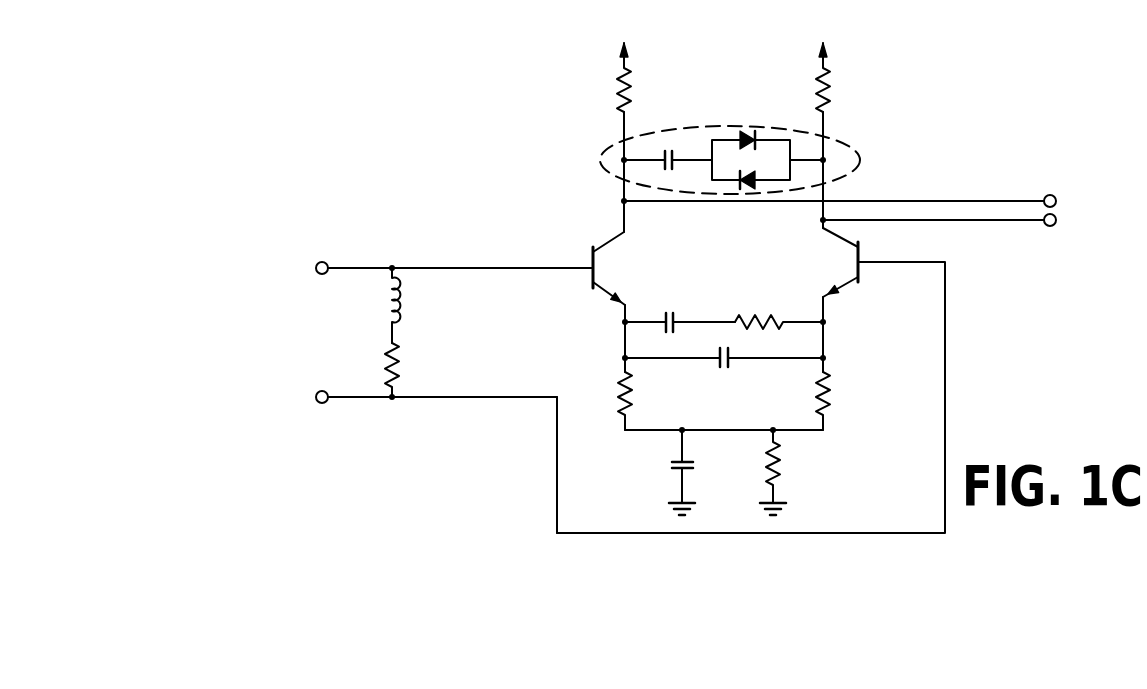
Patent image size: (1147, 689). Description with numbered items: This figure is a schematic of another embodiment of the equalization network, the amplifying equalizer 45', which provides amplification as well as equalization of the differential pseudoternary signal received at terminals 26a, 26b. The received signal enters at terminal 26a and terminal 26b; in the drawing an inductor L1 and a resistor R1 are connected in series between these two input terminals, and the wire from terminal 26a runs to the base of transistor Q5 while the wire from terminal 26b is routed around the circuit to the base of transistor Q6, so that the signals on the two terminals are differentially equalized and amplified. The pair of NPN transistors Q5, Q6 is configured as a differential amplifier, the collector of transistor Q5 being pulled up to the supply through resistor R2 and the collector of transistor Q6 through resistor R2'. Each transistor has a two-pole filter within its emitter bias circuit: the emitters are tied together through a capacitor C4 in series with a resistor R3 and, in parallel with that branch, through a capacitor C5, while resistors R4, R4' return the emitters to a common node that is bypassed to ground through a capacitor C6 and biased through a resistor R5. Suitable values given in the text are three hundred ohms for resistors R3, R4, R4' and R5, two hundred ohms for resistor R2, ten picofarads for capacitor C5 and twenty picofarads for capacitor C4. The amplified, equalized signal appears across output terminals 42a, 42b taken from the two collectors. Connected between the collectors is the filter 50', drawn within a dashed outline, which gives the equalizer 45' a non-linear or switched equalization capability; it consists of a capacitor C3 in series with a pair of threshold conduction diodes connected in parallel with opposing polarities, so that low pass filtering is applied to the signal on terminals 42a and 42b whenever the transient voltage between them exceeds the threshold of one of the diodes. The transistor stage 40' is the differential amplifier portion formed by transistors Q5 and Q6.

The terminal 26a is at (321, 262).
The terminal 26b is at (323, 403).
The differential amplifier stage (Q5/Q6) 40' is at (586, 242).
The filter 50' is at (696, 153).
The terminal 42a is at (1055, 197).
The terminal 42b is at (1055, 224).
The equalization network 45' is at (812, 397).
The inductor L1 is at (415, 305).
The resistor R1 is at (413, 370).
The resistor R2 is at (637, 64).
The collector load resistor R2' is at (845, 64).
The resistor R3 is at (779, 303).
The resistor R4 is at (607, 401).
The resistor R4' is at (847, 401).
The resistor R5 is at (788, 472).
The capacitor C3 is at (668, 169).
The capacitor C4 is at (680, 305).
The capacitor C5 is at (724, 376).
The bypass capacitor C6 is at (663, 472).
The NPN transistor Q5 is at (616, 242).
The NPN transistor Q6 is at (835, 242).